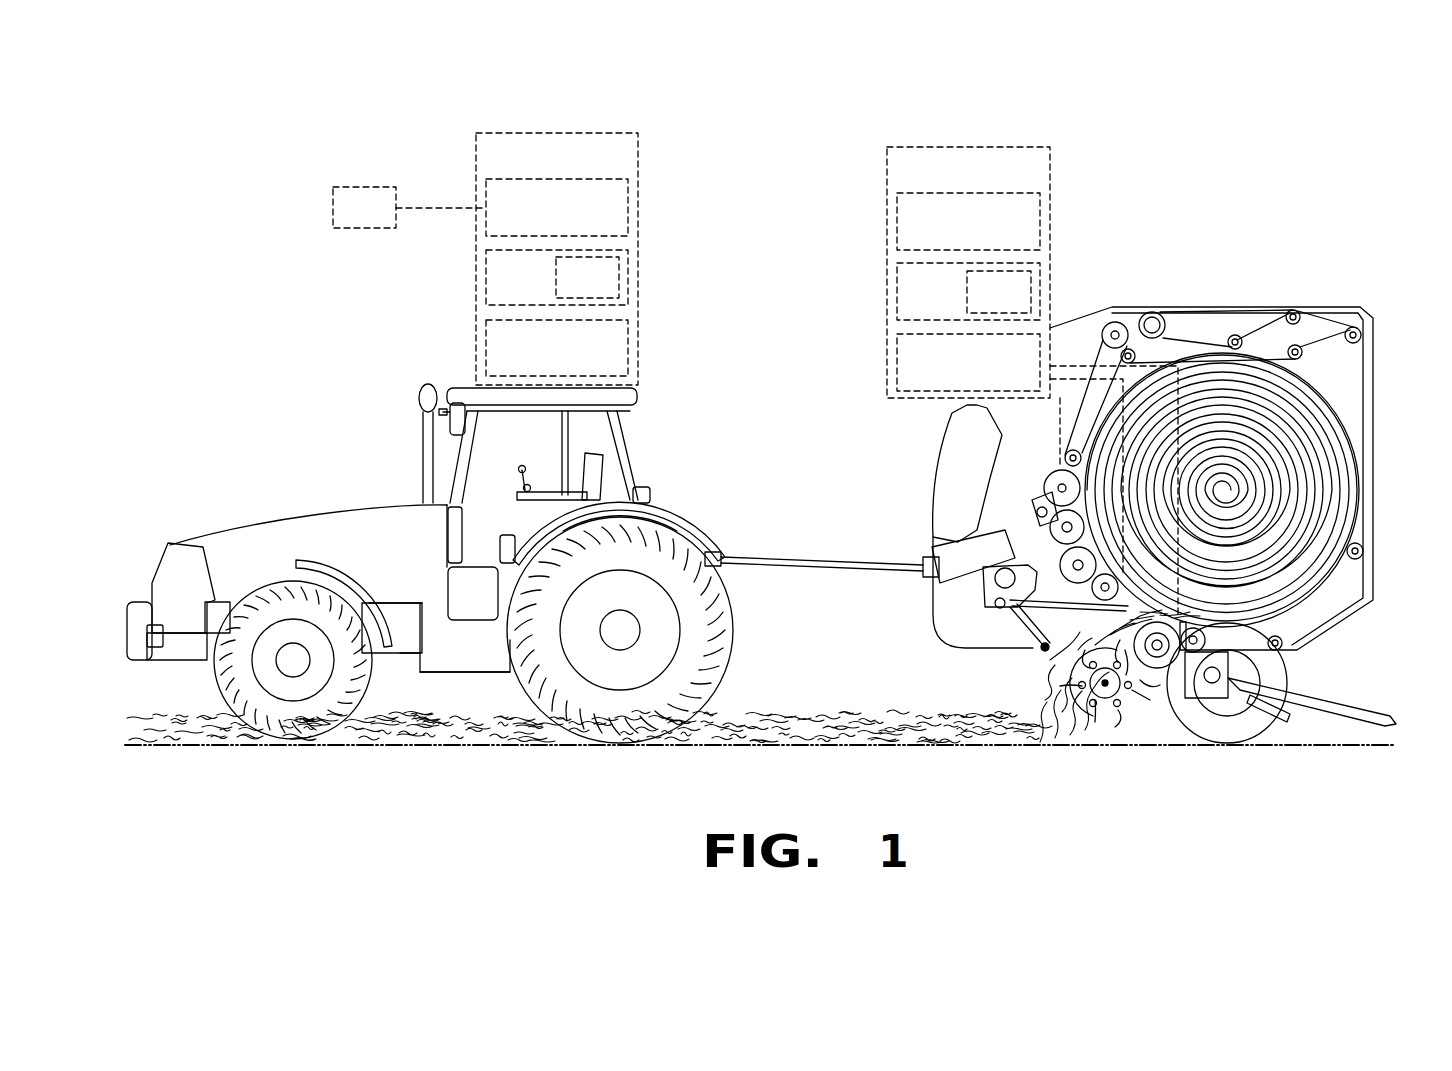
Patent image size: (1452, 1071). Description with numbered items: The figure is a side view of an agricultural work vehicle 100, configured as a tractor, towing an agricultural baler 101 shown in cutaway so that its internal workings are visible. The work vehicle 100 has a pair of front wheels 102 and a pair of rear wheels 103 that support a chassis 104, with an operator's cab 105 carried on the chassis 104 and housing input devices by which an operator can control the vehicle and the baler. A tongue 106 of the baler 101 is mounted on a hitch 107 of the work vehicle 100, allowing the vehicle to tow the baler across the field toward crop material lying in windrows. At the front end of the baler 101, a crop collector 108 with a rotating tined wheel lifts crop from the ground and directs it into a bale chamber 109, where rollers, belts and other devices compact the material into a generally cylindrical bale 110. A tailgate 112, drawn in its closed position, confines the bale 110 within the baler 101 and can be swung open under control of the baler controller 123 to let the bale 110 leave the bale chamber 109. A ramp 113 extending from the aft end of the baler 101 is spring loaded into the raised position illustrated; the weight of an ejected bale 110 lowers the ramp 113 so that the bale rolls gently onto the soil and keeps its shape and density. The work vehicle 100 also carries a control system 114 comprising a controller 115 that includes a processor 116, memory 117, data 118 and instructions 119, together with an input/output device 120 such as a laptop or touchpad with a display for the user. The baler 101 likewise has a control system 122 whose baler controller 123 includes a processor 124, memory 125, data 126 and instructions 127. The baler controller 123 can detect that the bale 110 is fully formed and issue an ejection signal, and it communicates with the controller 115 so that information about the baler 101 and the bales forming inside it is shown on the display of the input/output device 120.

The work vehicle 100 is at (268, 474).
The agricultural baler 101 is at (1122, 300).
The front wheels 102 is at (215, 680).
The rear wheels 103 is at (722, 660).
The chassis 104 is at (443, 668).
The operator's cab 105 is at (497, 418).
The tongue 106 is at (828, 565).
The hitch 107 is at (722, 547).
The crop collector 108 is at (1111, 717).
The bale chamber 109 is at (1270, 375).
The bale 110 is at (1328, 424).
The tailgate 112 is at (1362, 305).
The ramp 113 is at (1367, 710).
The control system 114 is at (667, 158).
The controller 115 is at (566, 167).
The processor 116 is at (540, 222).
The memory 117 is at (536, 291).
The data 118 is at (606, 291).
The instructions 119 is at (541, 364).
The input/output device 120 is at (384, 221).
The control system 122 is at (927, 443).
The baler controller 123 is at (979, 179).
The processor 124 is at (954, 234).
The memory 125 is at (948, 306).
The data 126 is at (1017, 306).
The instructions 127 is at (954, 376).